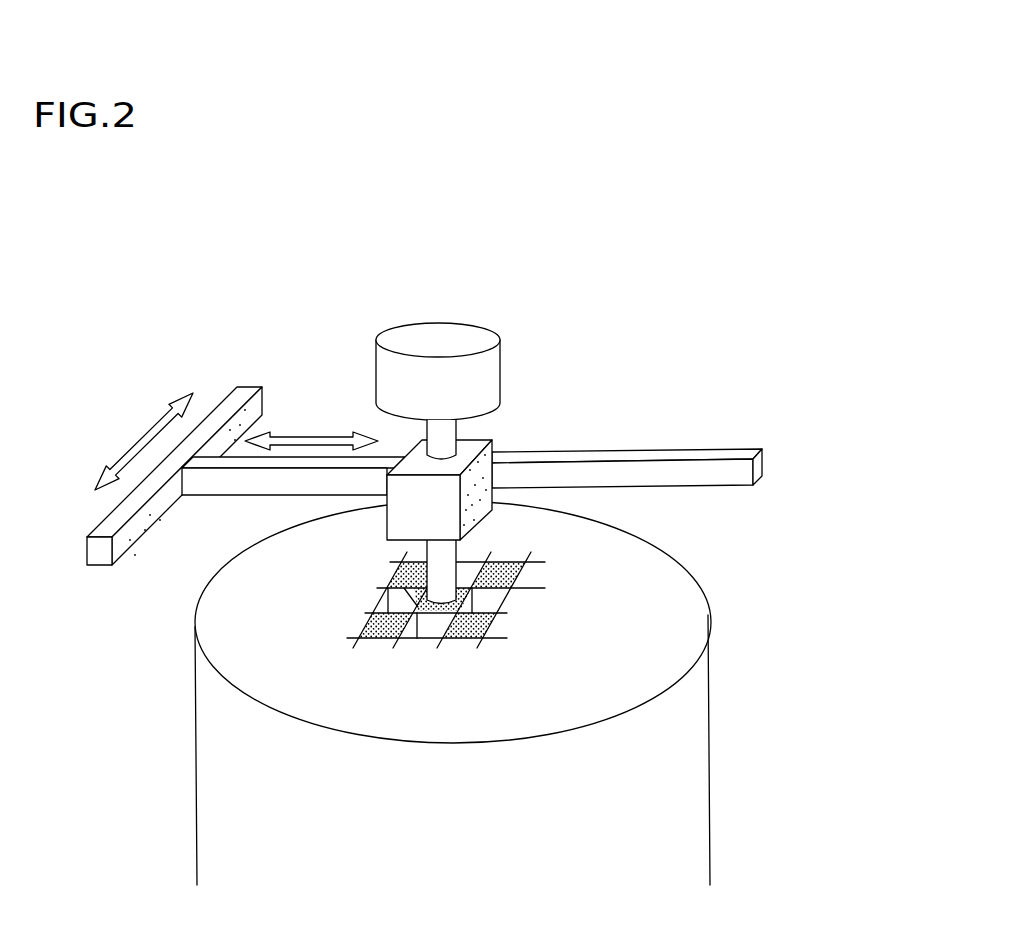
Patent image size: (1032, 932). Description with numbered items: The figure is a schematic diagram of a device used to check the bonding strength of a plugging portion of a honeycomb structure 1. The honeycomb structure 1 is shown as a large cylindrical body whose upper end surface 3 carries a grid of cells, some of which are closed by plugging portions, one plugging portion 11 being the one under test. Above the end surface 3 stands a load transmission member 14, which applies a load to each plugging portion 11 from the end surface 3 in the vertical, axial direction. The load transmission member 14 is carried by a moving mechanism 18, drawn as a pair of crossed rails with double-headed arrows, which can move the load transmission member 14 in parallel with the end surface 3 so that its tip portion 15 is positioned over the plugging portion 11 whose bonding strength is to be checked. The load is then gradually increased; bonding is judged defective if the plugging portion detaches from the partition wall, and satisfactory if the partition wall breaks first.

The honeycomb structure 1 is at (733, 720).
The end surface 3 is at (667, 578).
The plugging portion 11 is at (393, 587).
The load transmission member 14 is at (457, 552).
The tip portion 15 is at (458, 602).
The moving mechanism 18 is at (615, 432).